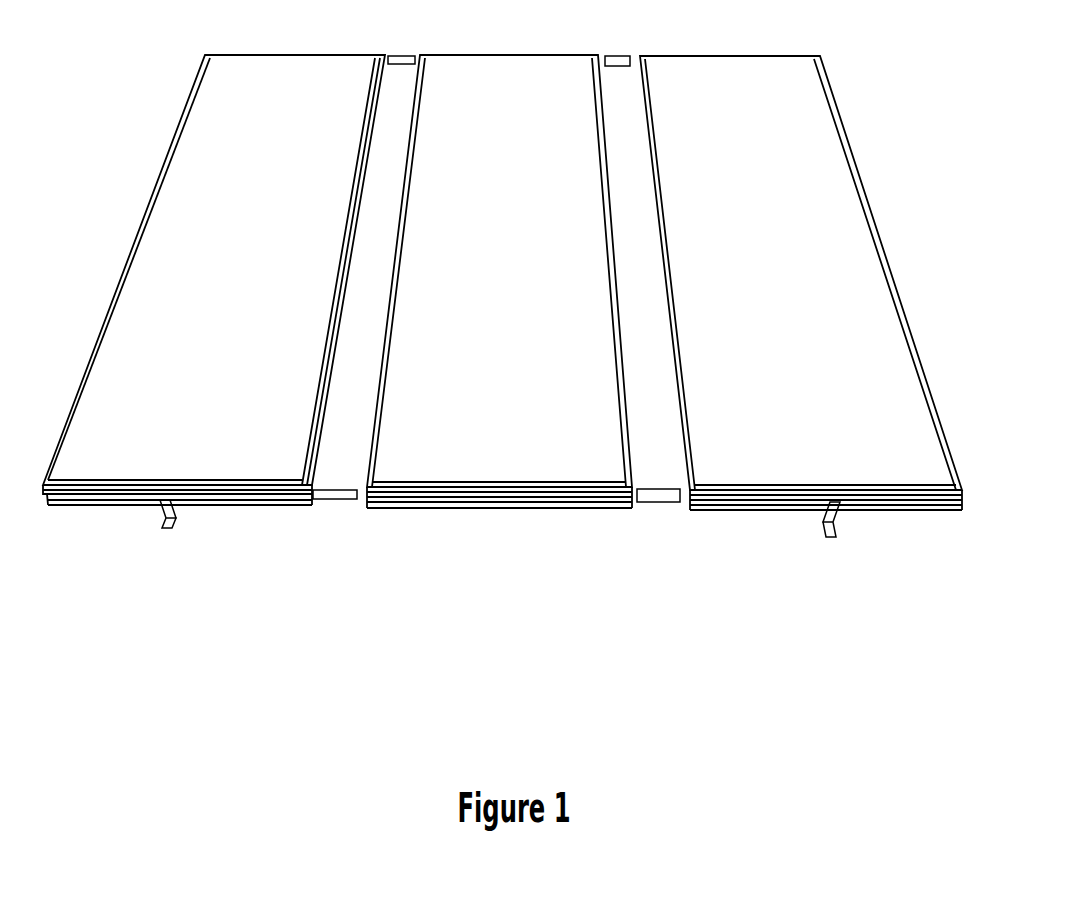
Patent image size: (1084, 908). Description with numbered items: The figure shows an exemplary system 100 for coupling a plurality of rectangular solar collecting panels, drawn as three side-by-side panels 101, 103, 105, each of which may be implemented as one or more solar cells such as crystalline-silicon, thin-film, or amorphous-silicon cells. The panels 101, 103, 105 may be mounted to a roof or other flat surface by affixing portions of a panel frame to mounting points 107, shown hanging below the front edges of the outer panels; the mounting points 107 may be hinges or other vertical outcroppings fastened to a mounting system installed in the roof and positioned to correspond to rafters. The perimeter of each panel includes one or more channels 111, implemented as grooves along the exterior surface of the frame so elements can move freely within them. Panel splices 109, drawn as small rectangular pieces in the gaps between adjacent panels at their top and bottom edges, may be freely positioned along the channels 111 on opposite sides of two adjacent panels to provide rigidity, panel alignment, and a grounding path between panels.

The system 100 is at (502, 373).
The panel 101 is at (214, 280).
The panel 103 is at (499, 281).
The panel 105 is at (801, 283).
The mounting point 107 is at (160, 535).
The panel splice 109 is at (400, 55).
The channel 111 is at (518, 501).